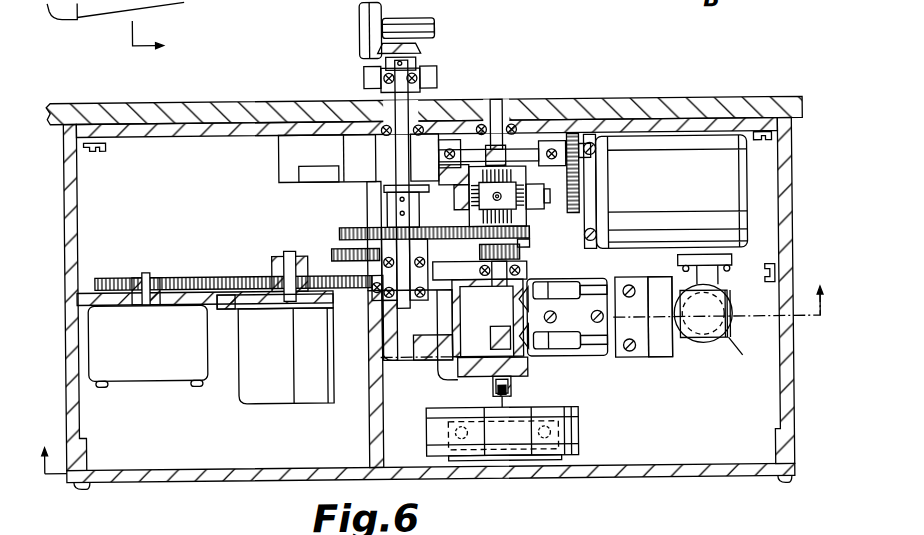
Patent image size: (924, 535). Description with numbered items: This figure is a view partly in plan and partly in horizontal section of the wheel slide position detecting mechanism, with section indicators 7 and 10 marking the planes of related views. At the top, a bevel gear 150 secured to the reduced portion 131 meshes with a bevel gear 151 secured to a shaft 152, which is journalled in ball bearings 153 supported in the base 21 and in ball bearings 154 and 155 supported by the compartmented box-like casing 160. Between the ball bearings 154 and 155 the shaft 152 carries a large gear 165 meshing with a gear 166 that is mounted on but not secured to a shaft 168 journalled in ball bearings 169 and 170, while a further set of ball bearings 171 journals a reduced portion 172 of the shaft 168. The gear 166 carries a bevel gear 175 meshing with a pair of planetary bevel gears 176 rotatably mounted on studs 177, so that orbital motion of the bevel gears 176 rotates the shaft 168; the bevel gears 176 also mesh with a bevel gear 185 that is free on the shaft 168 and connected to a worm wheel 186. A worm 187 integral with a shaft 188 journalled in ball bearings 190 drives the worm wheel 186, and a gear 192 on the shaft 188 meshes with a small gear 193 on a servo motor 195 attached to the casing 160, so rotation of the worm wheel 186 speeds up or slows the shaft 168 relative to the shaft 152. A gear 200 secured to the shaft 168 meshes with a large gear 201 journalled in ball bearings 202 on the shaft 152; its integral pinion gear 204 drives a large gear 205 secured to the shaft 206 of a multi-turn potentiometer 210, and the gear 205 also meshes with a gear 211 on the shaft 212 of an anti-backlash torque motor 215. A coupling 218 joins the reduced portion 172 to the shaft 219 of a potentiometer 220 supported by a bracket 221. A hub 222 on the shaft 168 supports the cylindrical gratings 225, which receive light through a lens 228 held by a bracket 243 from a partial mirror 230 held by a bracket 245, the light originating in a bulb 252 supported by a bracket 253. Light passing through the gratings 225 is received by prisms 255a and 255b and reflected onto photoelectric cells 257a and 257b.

The section line 7 is at (136, 39).
The section line 10 is at (431, 392).
The base 21 is at (440, 76).
The reduced portion 131 is at (444, 17).
The bevel gear 150 is at (397, 35).
The bevel gear 151 is at (426, 50).
The shaft 152 is at (417, 97).
The ball bearings 153 is at (368, 80).
The ball bearings 154 is at (425, 157).
The ball bearings 155 is at (398, 320).
The box-like casing 160 is at (214, 127).
The large gear 165 is at (362, 230).
The gear 166 is at (524, 238).
The shaft 168 is at (495, 130).
The ball bearings 169 is at (527, 271).
The ball bearings 170 is at (505, 148).
The ball bearings 171 is at (494, 382).
The reduced portion 172 is at (520, 364).
The bevel gear 175 is at (475, 222).
The planetary bevel gears 176 is at (470, 205).
The studs 177 is at (540, 198).
The bevel gear 185 is at (447, 176).
The worm wheel 186 is at (520, 140).
The worm 187 is at (490, 128).
The shaft 188 is at (545, 150).
The ball bearings 190 is at (574, 138).
The gear 192 is at (588, 145).
The small gear 193 is at (582, 176).
The servo motor 195 is at (730, 165).
The gear 200 is at (521, 252).
The large gear 201 is at (340, 233).
The ball bearings 202 is at (342, 254).
The pinion gear 204 is at (374, 298).
The large gear 205 is at (245, 276).
The shaft 206 is at (282, 295).
The multi-turn potentiometer 210 is at (283, 402).
The gear 211 is at (114, 276).
The shaft 212 is at (148, 275).
The anti-backlash torque motor 215 is at (145, 378).
The coupling 218 is at (511, 386).
The shaft 219 is at (502, 432).
The potentiometer 220 is at (578, 420).
The bracket 221 is at (501, 461).
The hub 222 is at (492, 344).
The cylindrical gratings 225 is at (460, 332).
The lens 228 is at (660, 359).
The partial mirror 230 is at (718, 312).
The bracket 243 is at (640, 360).
The bracket 245 is at (718, 323).
The bulb 252 is at (695, 278).
The bracket 253 is at (760, 268).
The prism 255a is at (566, 308).
The prism 255b is at (595, 326).
The photoelectric cell 257a is at (575, 288).
The photoelectric cell 257b is at (578, 352).